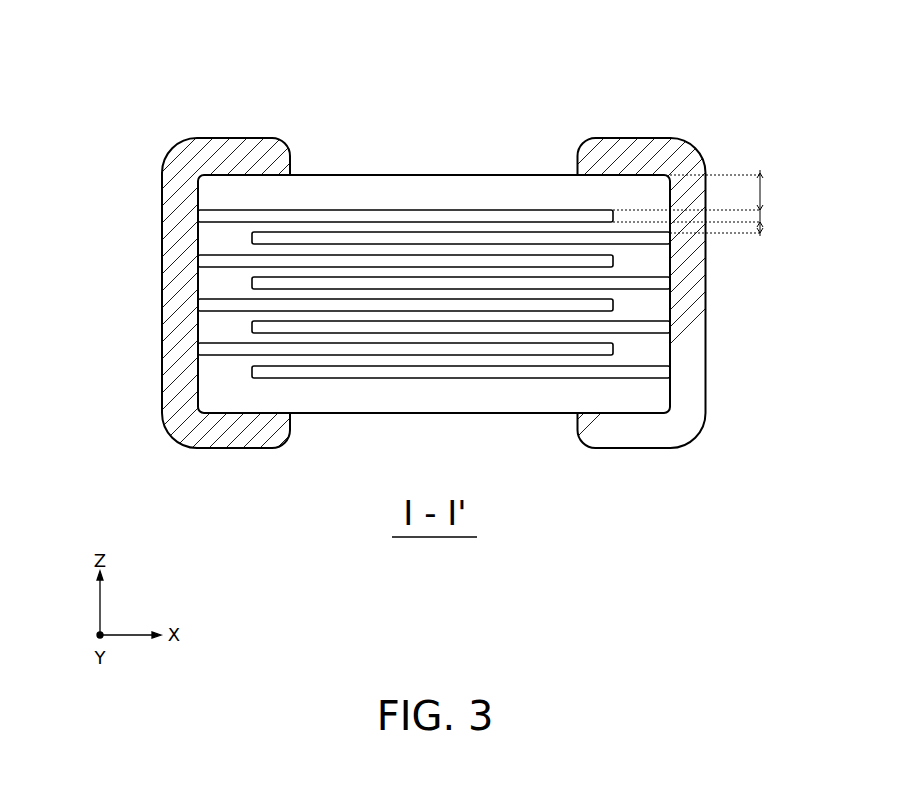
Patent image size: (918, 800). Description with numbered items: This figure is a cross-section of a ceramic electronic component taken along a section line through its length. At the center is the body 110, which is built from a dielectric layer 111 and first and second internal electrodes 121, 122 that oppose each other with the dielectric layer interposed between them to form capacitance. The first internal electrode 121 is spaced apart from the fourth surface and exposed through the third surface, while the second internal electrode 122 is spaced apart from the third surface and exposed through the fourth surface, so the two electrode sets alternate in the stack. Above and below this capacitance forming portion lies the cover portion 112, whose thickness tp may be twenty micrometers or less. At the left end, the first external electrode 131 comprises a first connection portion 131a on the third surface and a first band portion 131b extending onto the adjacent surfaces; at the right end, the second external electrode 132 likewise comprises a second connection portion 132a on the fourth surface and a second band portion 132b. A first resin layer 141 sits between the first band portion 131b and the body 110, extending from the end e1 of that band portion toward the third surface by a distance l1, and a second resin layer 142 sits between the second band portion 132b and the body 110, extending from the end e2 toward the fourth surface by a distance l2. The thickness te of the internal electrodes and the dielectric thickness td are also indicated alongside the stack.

The body 110 is at (367, 173).
The dielectric layer 111 is at (316, 250).
The cover portion 112 is at (437, 192).
The first internal electrode 121 is at (482, 212).
The second internal electrode 122 is at (535, 243).
The first external electrode 131 is at (77, 387).
The first connection portion 131a is at (182, 330).
The first band portion 131b is at (168, 427).
The second external electrode 132 is at (790, 390).
The second connection portion 132a is at (701, 340).
The second band portion 132b is at (668, 446).
The first resin layer 141 is at (255, 165).
The second resin layer 142 is at (601, 170).
The end of first band portion e1 is at (291, 173).
The end of second band portion e2 is at (578, 173).
The extension length of first resin layer l1 is at (288, 172).
The extension length of second resin layer l2 is at (650, 165).
The thickness of cover portion tp is at (763, 192).
The thickness of internal electrodes te is at (763, 213).
The thickness of dielectric layer td is at (763, 230).